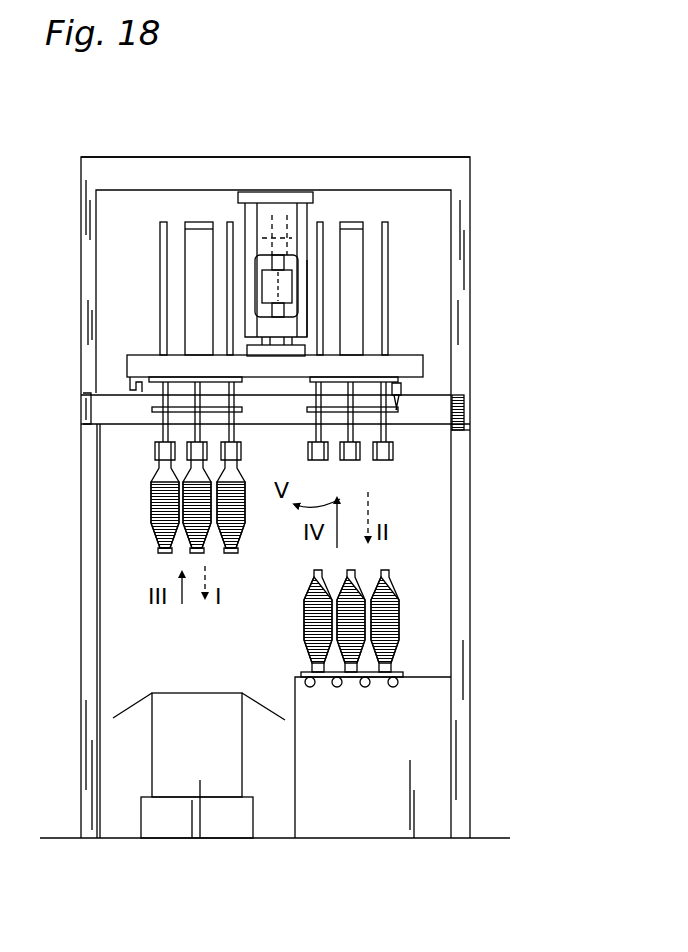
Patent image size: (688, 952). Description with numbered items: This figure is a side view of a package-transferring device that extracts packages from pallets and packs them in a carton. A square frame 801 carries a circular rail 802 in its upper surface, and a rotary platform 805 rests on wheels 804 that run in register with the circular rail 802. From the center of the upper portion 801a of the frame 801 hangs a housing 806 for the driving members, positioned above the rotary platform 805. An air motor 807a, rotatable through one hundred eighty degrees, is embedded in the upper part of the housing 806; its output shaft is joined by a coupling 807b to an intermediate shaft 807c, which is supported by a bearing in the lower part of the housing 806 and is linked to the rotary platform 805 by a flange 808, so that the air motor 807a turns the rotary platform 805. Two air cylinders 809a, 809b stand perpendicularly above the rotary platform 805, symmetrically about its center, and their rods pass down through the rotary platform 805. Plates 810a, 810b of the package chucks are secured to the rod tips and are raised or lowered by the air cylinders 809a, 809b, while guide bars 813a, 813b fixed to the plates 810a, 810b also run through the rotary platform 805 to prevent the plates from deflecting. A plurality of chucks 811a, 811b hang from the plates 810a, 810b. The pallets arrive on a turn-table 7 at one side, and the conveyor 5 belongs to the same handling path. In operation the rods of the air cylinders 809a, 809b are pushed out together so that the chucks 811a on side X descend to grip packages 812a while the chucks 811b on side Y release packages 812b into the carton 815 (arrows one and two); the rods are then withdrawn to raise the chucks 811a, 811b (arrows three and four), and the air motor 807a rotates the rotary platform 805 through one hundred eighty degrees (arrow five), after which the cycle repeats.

The square frame 801 is at (470, 552).
The upper portion of the frame 801a is at (452, 170).
The circular rail 802 is at (402, 402).
The wheels 804 is at (400, 379).
The rotary platform 805 is at (415, 368).
The housing 806 is at (305, 322).
The air motor 807a is at (277, 212).
The coupling 807b is at (283, 287).
The intermediate shaft 807c is at (268, 312).
The flange 808 is at (268, 357).
The air cylinder 809a is at (352, 222).
The air cylinder 809b is at (198, 222).
The plate 810a is at (400, 438).
The plate 810b is at (100, 400).
The chucks 811a is at (386, 461).
The chucks 811b is at (140, 455).
The packages 812a is at (400, 614).
The packages 812b is at (152, 507).
The guide bar 813a is at (320, 222).
The guide bar 813b is at (229, 222).
The carton 815 is at (248, 712).
The conveyor 5 is at (395, 676).
The turn-table 7 is at (447, 722).